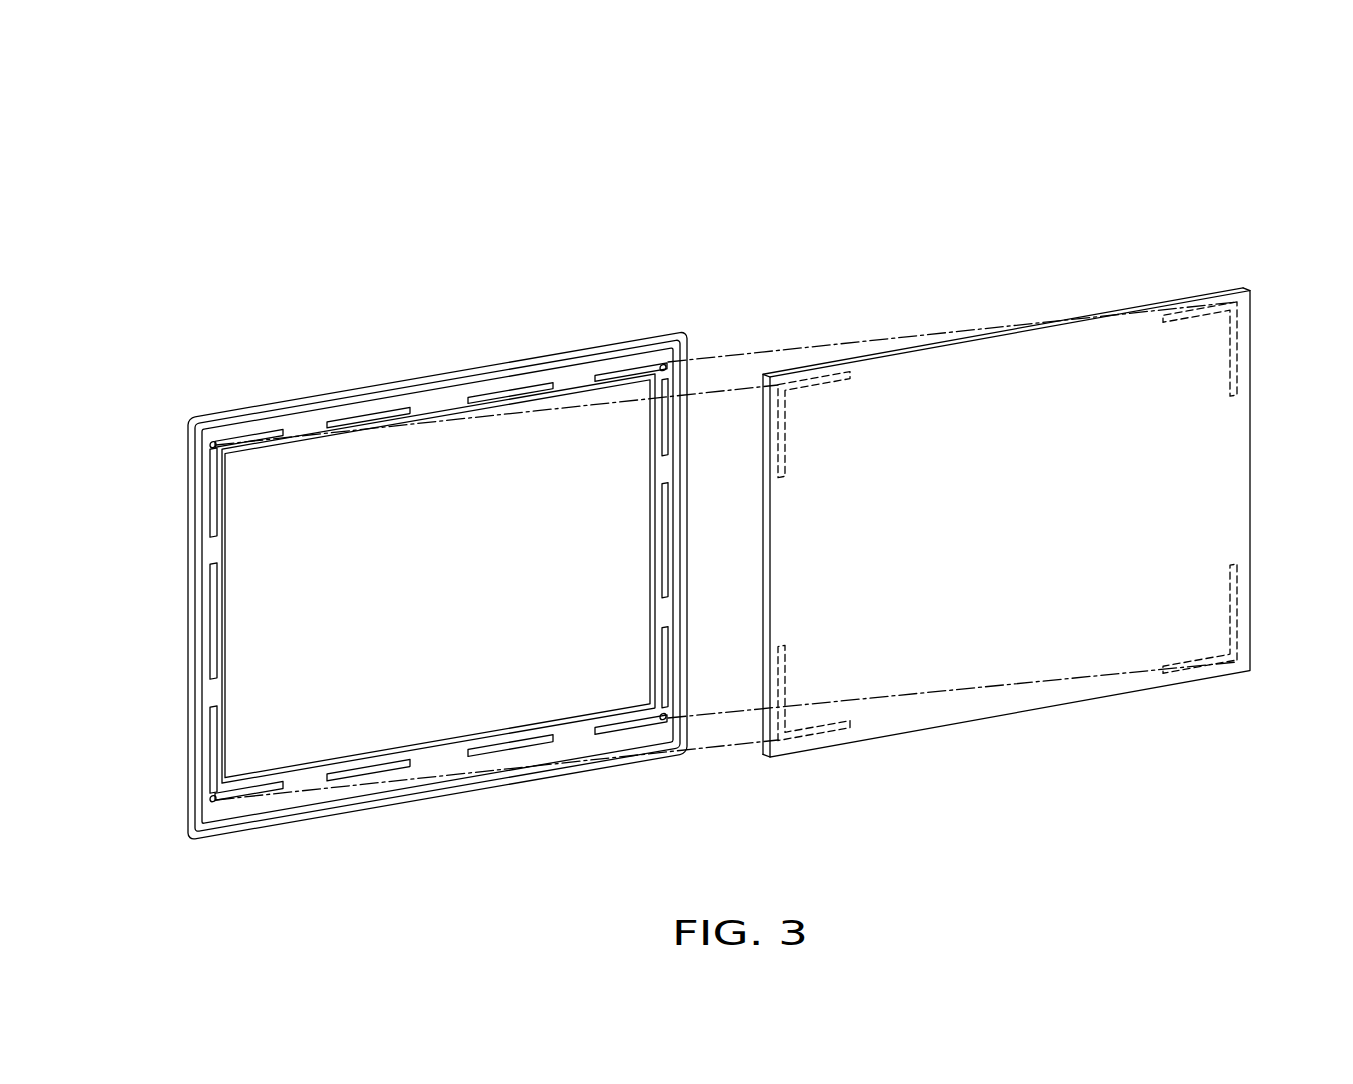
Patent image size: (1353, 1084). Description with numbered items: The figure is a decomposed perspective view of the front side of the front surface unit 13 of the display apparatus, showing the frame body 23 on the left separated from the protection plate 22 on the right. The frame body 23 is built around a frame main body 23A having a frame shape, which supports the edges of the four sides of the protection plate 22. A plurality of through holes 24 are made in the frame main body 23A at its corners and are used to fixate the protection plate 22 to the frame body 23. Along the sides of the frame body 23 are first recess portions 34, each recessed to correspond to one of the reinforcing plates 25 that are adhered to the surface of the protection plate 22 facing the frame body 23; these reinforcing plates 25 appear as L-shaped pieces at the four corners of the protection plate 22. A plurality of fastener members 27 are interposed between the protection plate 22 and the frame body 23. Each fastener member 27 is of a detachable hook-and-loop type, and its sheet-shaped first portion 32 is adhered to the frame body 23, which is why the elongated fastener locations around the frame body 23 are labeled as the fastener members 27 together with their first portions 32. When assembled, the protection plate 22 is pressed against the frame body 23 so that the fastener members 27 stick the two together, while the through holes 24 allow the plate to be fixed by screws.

The front surface unit 13 is at (1003, 170).
The protection plate 22 is at (1185, 292).
The frame body 23 is at (410, 380).
The frame main body 23A is at (450, 397).
The through holes 24 is at (214, 442).
The reinforcing plates 25 is at (823, 390).
The fastener members 27 is at (418, 573).
The first portion 32 is at (346, 420).
The first recess portion 34 is at (210, 484).